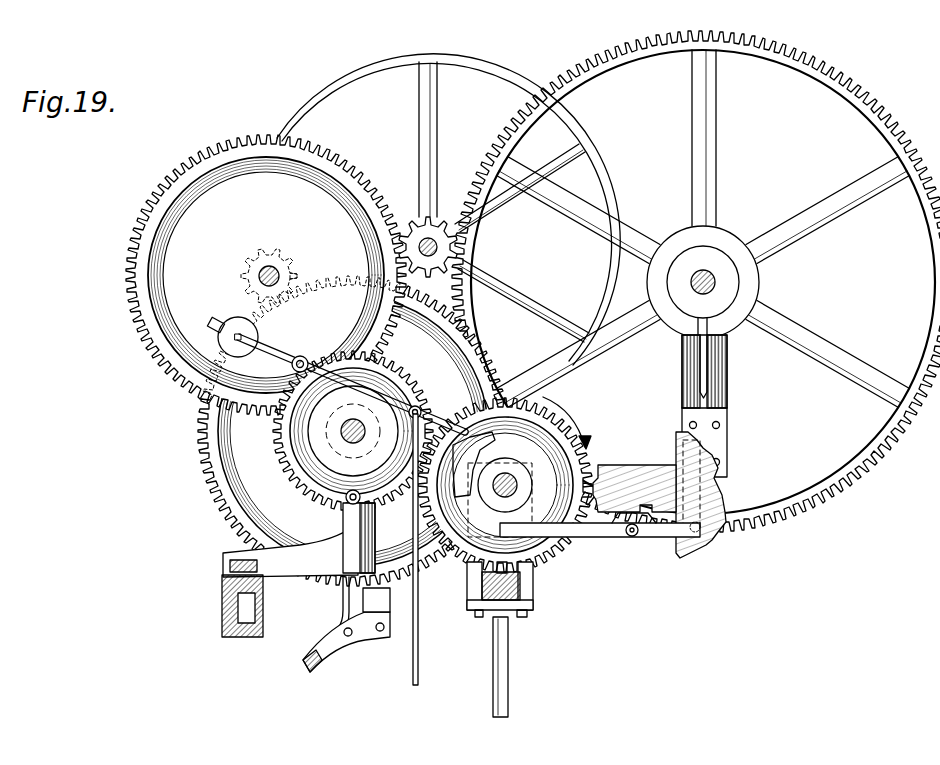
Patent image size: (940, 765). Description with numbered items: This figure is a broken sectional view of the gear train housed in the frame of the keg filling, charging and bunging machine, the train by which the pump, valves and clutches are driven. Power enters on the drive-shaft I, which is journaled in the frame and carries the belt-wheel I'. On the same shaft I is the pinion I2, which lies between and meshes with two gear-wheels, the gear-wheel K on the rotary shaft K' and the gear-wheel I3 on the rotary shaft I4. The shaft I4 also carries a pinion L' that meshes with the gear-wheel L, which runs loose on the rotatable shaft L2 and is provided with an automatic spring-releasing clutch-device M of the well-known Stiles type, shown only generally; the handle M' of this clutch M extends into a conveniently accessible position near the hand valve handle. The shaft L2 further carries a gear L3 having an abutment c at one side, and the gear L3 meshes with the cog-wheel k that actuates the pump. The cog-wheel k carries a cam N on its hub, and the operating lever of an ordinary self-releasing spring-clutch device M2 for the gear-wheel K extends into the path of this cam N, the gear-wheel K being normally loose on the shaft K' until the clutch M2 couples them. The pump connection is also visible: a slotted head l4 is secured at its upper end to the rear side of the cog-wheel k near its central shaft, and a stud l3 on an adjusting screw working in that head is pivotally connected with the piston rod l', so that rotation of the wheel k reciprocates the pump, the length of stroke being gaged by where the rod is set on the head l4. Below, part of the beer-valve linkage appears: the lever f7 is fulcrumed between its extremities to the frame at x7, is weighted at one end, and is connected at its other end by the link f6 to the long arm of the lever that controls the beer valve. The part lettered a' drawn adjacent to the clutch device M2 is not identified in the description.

The gear-wheel K is at (696, 281).
The rotary shaft K' is at (722, 282).
The drive-shaft I is at (454, 247).
The belt-wheel I' is at (448, 209).
The pinion I2 is at (442, 213).
The gear-wheel I3 is at (266, 275).
The rotary shaft I4 is at (268, 266).
The gear-wheel L is at (326, 435).
The pinion L' is at (279, 255).
The rotatable shaft L2 is at (343, 431).
The gear L3 is at (278, 437).
The automatic spring-releasing clutch-device M is at (290, 561).
The handle of clutch M' is at (346, 636).
The self-releasing spring-clutch device M2 is at (710, 312).
The cam N is at (440, 416).
The abutment c is at (327, 503).
The horizontal bar a' is at (600, 546).
The cog-wheel k is at (506, 478).
The link f6 is at (419, 623).
The lever f7 is at (317, 372).
The fulcrum x7 is at (300, 356).
The piston rod l' is at (513, 667).
The stud l3 is at (497, 586).
The slotted head l4 is at (522, 592).